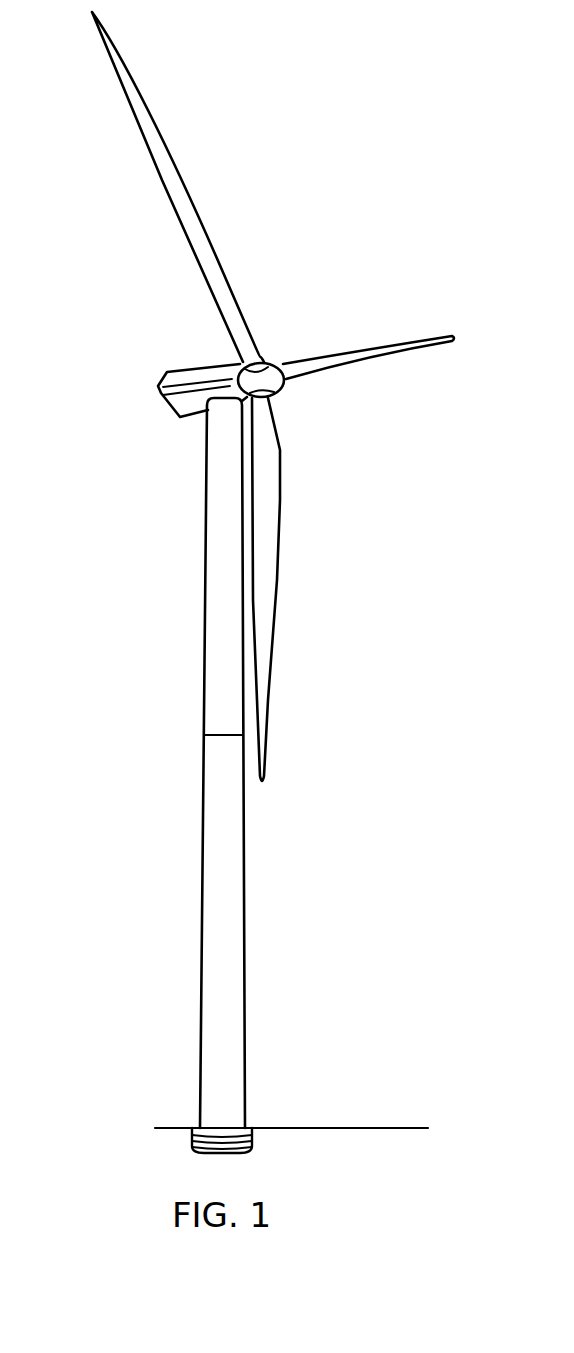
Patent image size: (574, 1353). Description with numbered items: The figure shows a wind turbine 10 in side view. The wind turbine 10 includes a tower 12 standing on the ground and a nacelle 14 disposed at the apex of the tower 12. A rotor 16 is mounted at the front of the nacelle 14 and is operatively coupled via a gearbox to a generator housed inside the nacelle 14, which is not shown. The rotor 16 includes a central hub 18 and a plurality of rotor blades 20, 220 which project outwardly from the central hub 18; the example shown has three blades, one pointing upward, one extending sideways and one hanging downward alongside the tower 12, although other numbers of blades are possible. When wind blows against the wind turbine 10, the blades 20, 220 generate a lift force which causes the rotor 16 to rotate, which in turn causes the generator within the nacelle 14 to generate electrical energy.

The wind turbine 10 is at (285, 582).
The tower 12 is at (222, 885).
The nacelle 14 is at (183, 378).
The rotor 16 is at (315, 396).
The central hub 18 is at (278, 382).
The rotor blade 20 is at (286, 396).
The rotor blade 220 is at (157, 148).